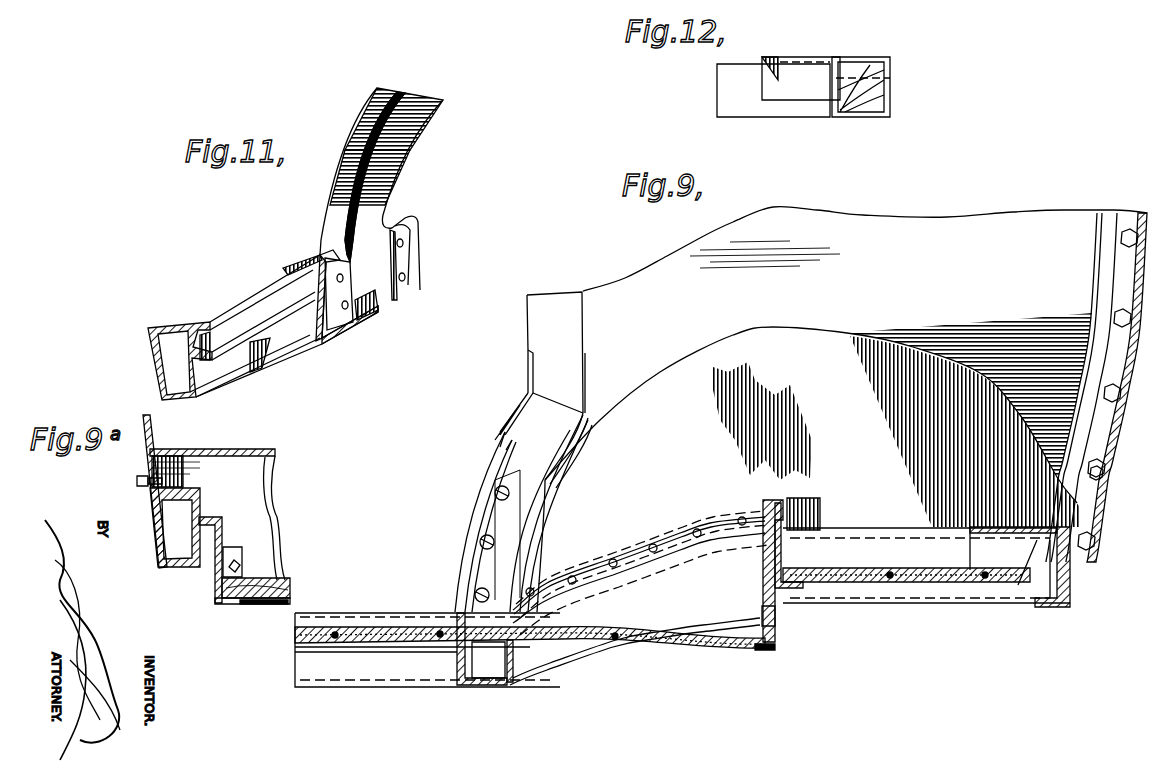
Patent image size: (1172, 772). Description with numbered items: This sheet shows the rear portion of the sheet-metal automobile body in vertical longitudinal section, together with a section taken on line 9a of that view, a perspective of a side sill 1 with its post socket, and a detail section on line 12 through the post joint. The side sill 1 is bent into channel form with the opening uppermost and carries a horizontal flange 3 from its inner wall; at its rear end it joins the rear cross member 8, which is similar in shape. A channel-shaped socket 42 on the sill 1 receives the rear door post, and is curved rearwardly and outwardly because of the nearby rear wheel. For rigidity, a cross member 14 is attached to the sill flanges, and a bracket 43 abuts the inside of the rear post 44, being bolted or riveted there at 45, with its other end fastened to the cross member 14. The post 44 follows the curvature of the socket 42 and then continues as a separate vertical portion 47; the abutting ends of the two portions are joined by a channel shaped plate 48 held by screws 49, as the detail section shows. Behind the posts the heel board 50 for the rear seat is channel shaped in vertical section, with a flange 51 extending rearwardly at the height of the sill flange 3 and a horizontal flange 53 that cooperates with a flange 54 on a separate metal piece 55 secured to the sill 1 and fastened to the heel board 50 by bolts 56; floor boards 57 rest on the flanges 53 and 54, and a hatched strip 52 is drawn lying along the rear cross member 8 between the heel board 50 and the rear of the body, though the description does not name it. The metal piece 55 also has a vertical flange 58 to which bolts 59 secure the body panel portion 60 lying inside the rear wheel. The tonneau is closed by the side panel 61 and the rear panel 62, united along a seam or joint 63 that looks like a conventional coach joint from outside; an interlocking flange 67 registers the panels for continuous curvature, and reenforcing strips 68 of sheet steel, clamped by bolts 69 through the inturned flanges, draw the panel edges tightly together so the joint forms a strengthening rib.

In FIG. 11, the side sill 1 is at (165, 373).
In FIG. 9a, the side sill 1 is at (150, 523).
In FIG. 9, the side sill 1 is at (358, 690).
In FIG. 9, the horizontal flange 3 is at (1030, 583).
In FIG. 9, the rear cross member 8 is at (1068, 598).
In FIG. 9, the section line 9a- 9a is at (752, 494).
In FIG. 9, the section line 12- 12 is at (492, 328).
In FIG. 9, the cross member 14 is at (485, 688).
In FIG. 11, the socket 42 is at (368, 120).
In FIG. 9, the socket 42 is at (465, 560).
In FIG. 9, the bracket 43 is at (495, 510).
In FIG. 12, the rear post 44 is at (748, 98).
In FIG. 9, the rear post 44 is at (535, 440).
In FIG. 9, the bolts or rivets 45 is at (495, 493).
In FIG. 12, the vertical portion of the post 47 is at (878, 112).
In FIG. 9, the vertical portion of the post 47 is at (558, 308).
In FIG. 12, the channel shaped plate 48 is at (812, 80).
In FIG. 9, the channel shaped plate 48 is at (528, 396).
In FIG. 12, the screws 49 is at (892, 78).
In FIG. 9a, the heel board 50 is at (258, 478).
In FIG. 9, the heel board 50 is at (762, 517).
In FIG. 9, the flange 51 is at (795, 600).
In FIG. 9, the packing strip 52 is at (922, 585).
In FIG. 9a, the horizontal flange 53 is at (266, 605).
In FIG. 9, the horizontal flange 53 is at (750, 640).
In FIG. 9a, the flange 54 is at (223, 603).
In FIG. 9, the flange 54 is at (640, 642).
In FIG. 9a, the metal piece 55 is at (199, 506).
In FIG. 9, the metal piece 55 is at (634, 580).
In FIG. 9a, the bolts 56 is at (247, 570).
In FIG. 9, the bolts 56 is at (776, 622).
In FIG. 9a, the floor boards 57 is at (268, 580).
In FIG. 9, the floor boards 57 is at (680, 652).
In FIG. 9a, the vertical flange 58 is at (158, 478).
In FIG. 9, the vertical flange 58 is at (672, 538).
In FIG. 9a, the bolts 59 is at (163, 472).
In FIG. 9, the bolts 59 is at (571, 576).
In FIG. 9a, the body panel portion 60 is at (145, 415).
In FIG. 9, the body panel portion 60 is at (735, 357).
In FIG. 9, the side panel 61 is at (1000, 230).
In FIG. 9, the rear panel 62 is at (1120, 375).
In FIG. 9, the seam or joint 63 is at (1124, 225).
In FIG. 9, the flange 67 is at (1105, 270).
In FIG. 9, the reenforcing strip 68 is at (1128, 287).
In FIG. 9, the bolt 69 is at (1102, 468).